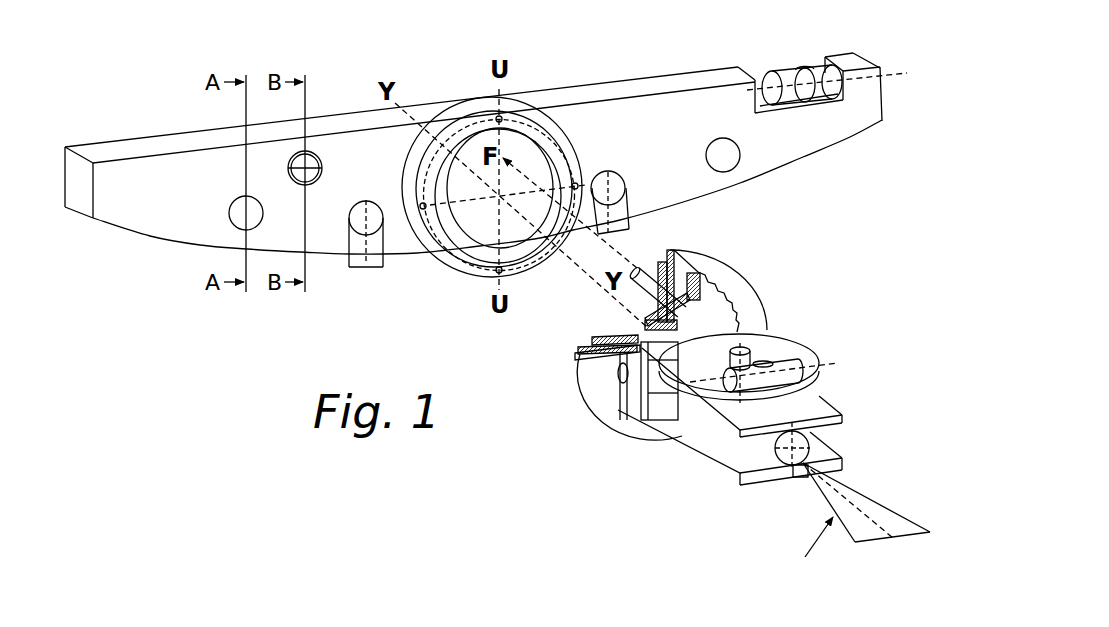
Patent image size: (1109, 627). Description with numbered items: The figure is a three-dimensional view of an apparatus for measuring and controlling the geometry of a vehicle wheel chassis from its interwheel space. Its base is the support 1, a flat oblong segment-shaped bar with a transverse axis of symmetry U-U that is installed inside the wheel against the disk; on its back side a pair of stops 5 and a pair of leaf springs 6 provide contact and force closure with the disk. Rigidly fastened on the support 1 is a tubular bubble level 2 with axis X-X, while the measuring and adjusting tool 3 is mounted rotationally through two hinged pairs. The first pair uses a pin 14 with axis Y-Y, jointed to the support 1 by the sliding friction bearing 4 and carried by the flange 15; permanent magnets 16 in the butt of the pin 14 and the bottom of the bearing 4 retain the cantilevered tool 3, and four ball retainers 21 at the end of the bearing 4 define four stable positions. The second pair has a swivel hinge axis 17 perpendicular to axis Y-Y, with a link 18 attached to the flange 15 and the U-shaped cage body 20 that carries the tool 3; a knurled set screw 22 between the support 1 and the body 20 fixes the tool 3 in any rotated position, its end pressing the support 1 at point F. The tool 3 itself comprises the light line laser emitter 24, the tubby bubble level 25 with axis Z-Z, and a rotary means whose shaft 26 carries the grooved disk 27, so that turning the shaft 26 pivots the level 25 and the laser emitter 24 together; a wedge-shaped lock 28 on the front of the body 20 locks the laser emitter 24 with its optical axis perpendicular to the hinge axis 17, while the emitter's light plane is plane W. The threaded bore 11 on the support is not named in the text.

The support 1 is at (693, 97).
The tubular bubble level 2 is at (783, 73).
The measuring and adjusting tool 3 is at (762, 290).
The sliding friction bearing 4 is at (465, 110).
The stops 5 is at (238, 218).
The leaf springs 6 is at (367, 253).
The threaded bore 11 is at (308, 163).
The pin 14 is at (669, 252).
The flange 15 is at (598, 377).
The permanent magnets 16 is at (612, 337).
The swivel hinge axis 17 is at (628, 378).
The link 18 is at (626, 417).
The U-shaped cage body 20 is at (657, 407).
The ball retainers 21 is at (502, 117).
The set screw 22 is at (698, 302).
The light line laser emitter 24 is at (767, 437).
The tubby bubble level 25 is at (796, 359).
The shaft 26 is at (748, 348).
The grooved disk 27 is at (745, 352).
The wedge-shaped lock 28 is at (797, 473).